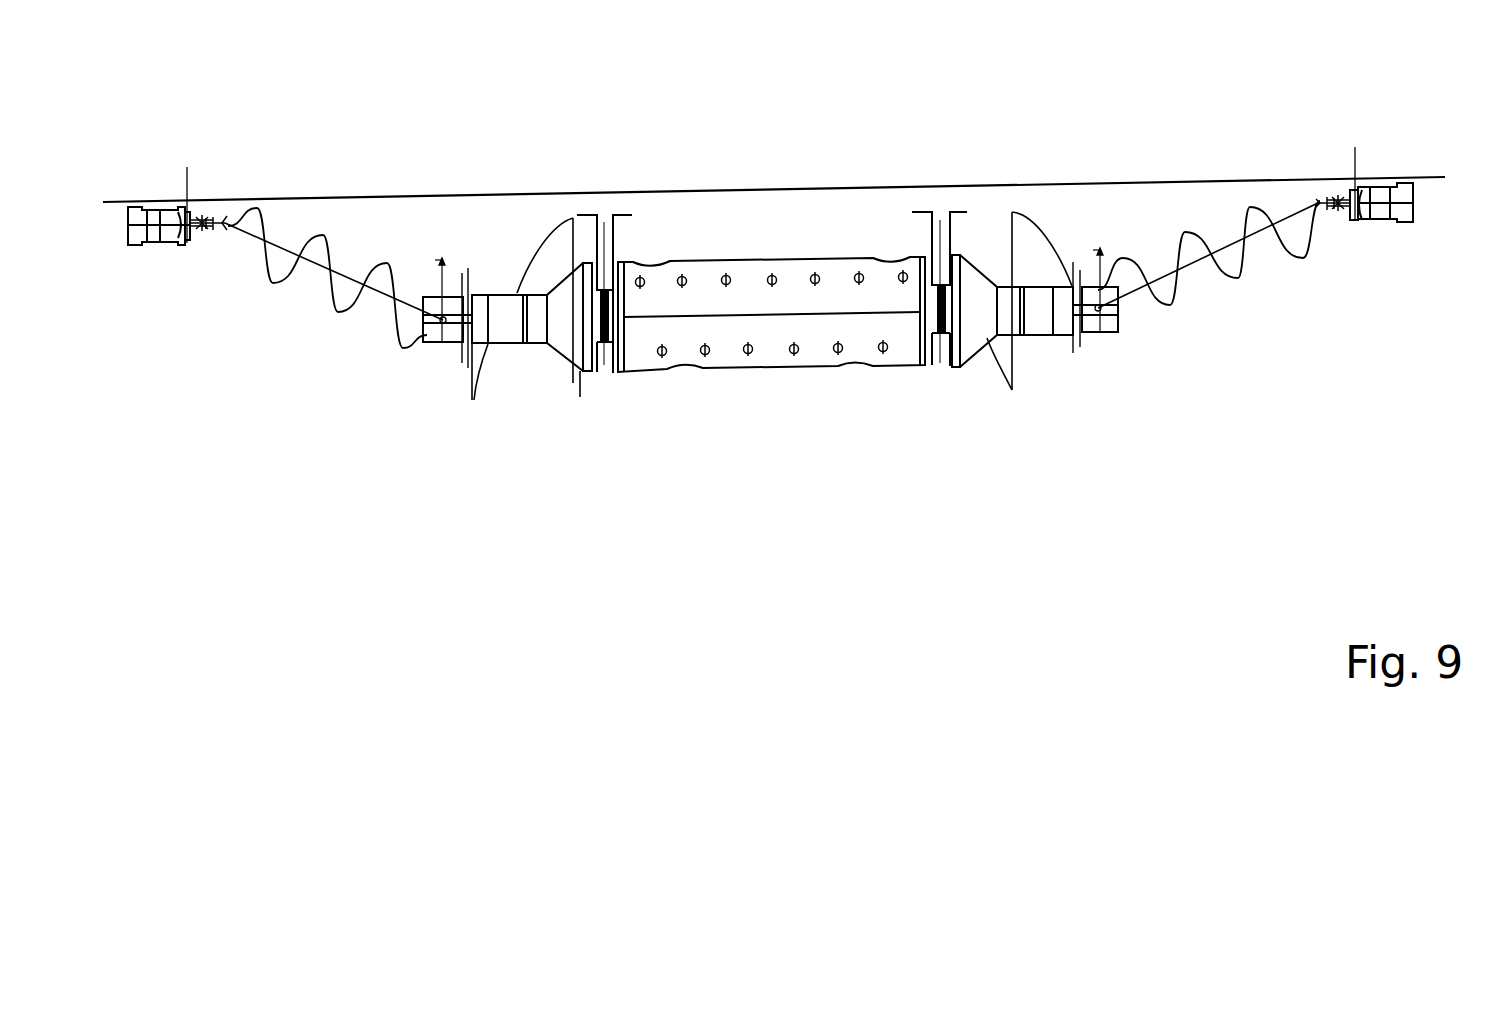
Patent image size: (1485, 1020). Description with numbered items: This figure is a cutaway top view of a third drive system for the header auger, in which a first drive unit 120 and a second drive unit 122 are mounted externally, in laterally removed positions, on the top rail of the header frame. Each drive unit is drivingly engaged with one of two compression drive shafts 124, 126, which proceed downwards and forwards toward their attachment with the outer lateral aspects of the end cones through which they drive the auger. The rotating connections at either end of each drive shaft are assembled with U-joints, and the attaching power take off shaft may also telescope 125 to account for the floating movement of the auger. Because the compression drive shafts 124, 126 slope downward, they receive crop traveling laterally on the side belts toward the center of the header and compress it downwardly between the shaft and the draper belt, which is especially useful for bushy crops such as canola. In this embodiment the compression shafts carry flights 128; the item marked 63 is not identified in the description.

The washer plates 63 is at (1063, 262).
The first drive unit 120 is at (162, 208).
The second drive unit 122 is at (1383, 190).
The compression drive shaft 124 is at (305, 312).
The telescope 125 is at (1338, 220).
The compression drive shaft 126 is at (1197, 206).
The flights 128 is at (1233, 260).